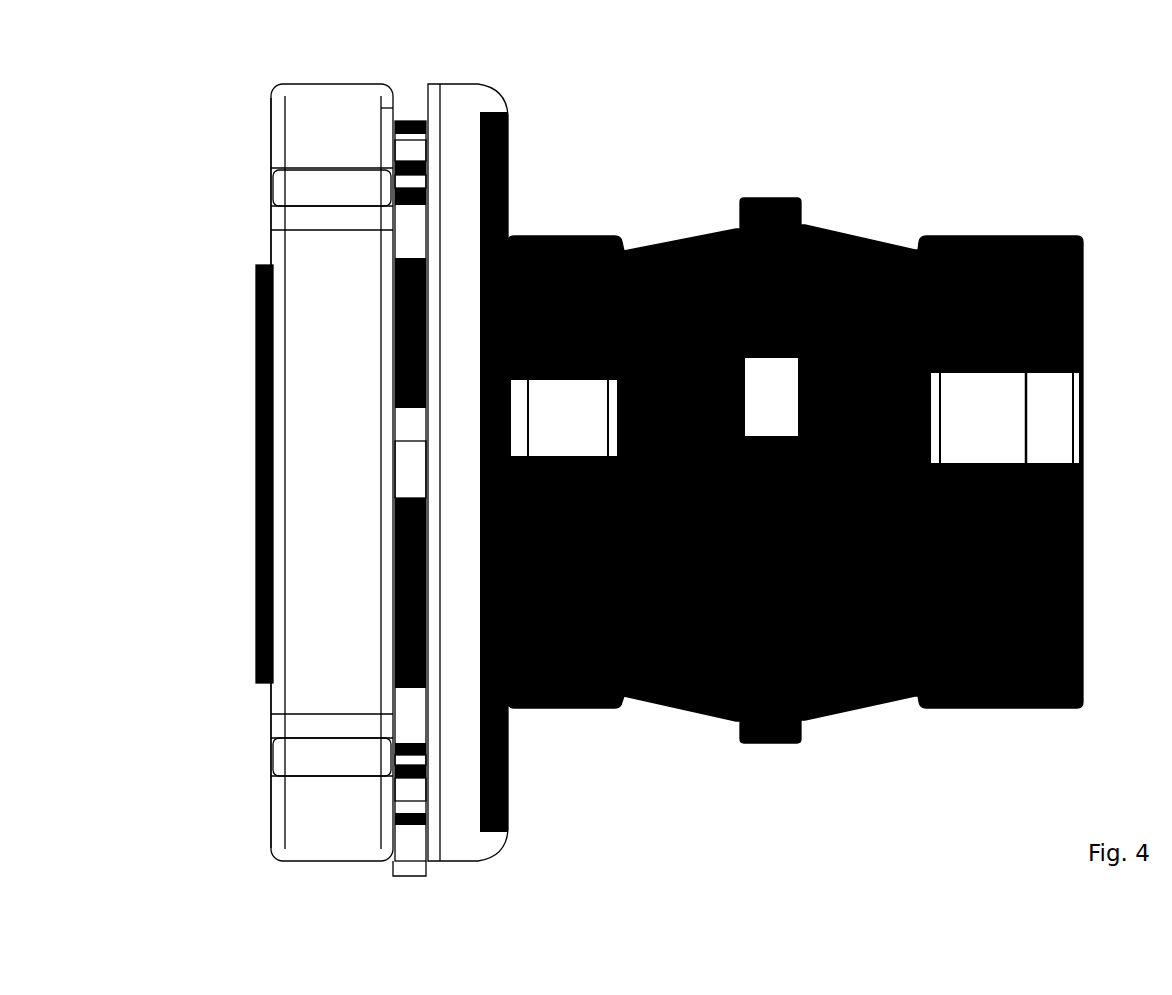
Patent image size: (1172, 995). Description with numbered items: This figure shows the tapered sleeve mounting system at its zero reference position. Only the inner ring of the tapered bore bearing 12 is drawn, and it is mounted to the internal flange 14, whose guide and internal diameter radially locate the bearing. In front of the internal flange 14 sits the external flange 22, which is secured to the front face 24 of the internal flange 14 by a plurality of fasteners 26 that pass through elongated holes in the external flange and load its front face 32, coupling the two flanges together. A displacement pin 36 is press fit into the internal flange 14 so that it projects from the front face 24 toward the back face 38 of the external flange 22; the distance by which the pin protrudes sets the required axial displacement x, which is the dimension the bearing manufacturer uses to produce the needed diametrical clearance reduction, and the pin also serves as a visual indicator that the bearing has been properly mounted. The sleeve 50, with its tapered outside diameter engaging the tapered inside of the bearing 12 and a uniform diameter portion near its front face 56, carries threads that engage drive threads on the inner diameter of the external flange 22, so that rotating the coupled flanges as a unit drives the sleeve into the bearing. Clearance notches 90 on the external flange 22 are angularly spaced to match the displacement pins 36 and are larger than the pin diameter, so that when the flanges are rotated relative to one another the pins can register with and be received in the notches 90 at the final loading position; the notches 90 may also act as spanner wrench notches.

The tapered bore bearing 12 is at (833, 224).
The internal flange 14 is at (494, 157).
The external flange 22 is at (272, 82).
The front face of the internal flange 24 is at (383, 167).
The fasteners 26 is at (388, 140).
The front face of the external flange 32 is at (265, 108).
The displacement pin 36 is at (405, 180).
The back face of the external flange 38 is at (375, 107).
The sleeve 50 is at (250, 500).
The front face of the sleeve 56 is at (250, 385).
The clearance notches 90 is at (265, 163).
The required axial displacement x is at (402, 868).